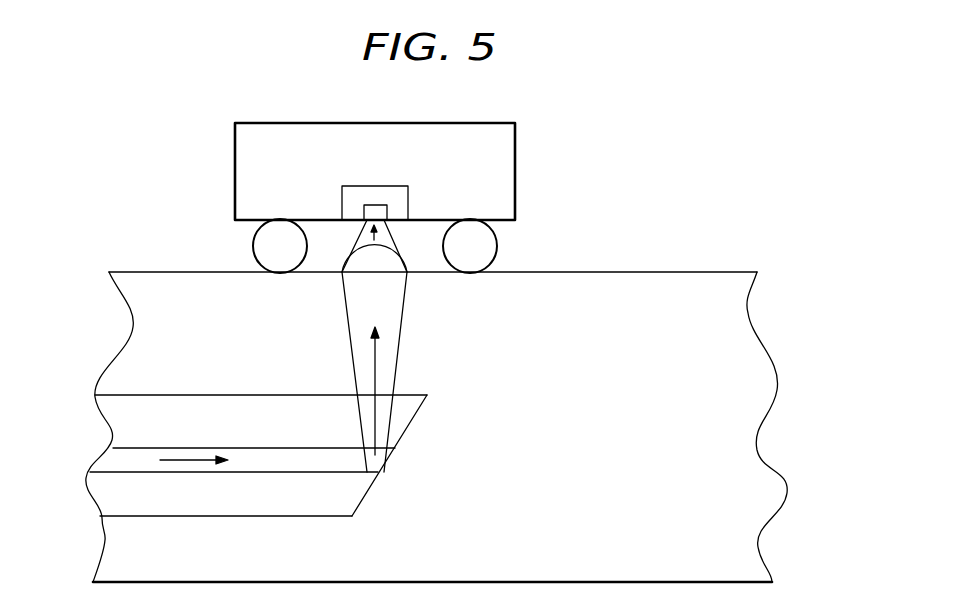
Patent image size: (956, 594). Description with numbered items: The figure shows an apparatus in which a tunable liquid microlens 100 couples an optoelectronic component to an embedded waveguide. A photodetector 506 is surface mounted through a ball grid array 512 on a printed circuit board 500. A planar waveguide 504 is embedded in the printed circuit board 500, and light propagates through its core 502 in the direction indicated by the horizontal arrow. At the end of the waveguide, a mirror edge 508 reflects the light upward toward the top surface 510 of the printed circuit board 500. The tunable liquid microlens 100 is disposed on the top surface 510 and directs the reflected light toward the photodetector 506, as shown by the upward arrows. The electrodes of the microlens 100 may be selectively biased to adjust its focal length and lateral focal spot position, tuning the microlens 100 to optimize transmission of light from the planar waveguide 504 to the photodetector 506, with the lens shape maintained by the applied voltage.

The tunable liquid microlens 100 is at (403, 253).
The printed circuit board 500 is at (757, 272).
The core 502 is at (278, 460).
The planar waveguide 504 is at (243, 410).
The photodetector 506 is at (515, 155).
The mirror edge 508 is at (368, 493).
The top surface 510 is at (688, 272).
The ball grid array 512 is at (254, 246).